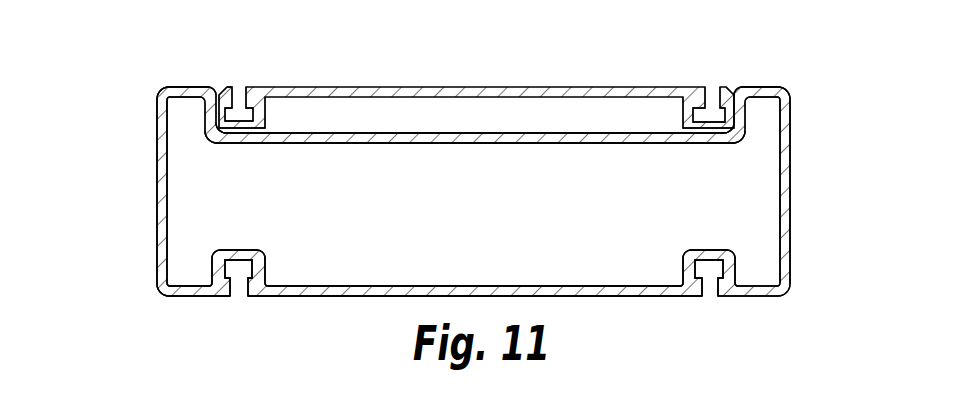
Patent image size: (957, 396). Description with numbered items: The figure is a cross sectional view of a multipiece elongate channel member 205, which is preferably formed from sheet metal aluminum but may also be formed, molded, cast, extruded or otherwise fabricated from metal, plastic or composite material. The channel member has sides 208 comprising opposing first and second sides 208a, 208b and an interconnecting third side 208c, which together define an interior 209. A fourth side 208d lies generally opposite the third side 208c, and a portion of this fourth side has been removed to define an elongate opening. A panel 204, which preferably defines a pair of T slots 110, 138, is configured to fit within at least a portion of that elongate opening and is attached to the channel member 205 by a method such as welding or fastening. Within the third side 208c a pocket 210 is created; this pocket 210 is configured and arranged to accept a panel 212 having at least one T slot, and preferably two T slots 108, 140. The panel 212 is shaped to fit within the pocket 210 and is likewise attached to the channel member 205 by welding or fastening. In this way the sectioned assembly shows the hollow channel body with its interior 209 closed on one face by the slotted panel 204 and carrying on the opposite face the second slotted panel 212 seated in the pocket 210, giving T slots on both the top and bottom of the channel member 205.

The elongate channel member 205 is at (122, 95).
The channel member sides 208 is at (162, 160).
The first side 208a is at (789, 202).
The second side 208b is at (158, 214).
The third side 208c is at (187, 88).
The fourth side 208d is at (200, 296).
The panel 204 is at (577, 297).
The interior 209 is at (485, 230).
The pocket 210 is at (463, 143).
The panel 212 is at (442, 87).
The T slot 140 is at (238, 107).
The T slot 108 is at (712, 108).
The T slot 138 is at (239, 272).
The T slot 110 is at (708, 270).